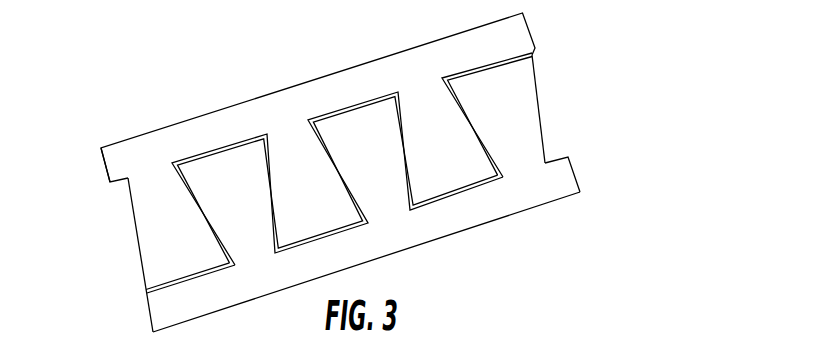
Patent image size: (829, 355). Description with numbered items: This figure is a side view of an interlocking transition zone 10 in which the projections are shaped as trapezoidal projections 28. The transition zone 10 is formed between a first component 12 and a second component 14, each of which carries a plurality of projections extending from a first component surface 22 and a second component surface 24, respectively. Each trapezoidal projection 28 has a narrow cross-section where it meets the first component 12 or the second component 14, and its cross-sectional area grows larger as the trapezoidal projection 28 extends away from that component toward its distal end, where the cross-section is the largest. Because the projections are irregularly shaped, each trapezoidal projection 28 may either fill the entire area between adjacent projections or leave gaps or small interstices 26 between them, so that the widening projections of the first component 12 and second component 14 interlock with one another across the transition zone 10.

The interlocking transition zone 10 is at (634, 49).
The first component 12 is at (420, 222).
The second component 14 is at (253, 125).
The first component surface 22 is at (558, 158).
The second component surface 24 is at (121, 184).
The interstices 26 is at (143, 291).
The trapezoidal projection 28 is at (503, 108).